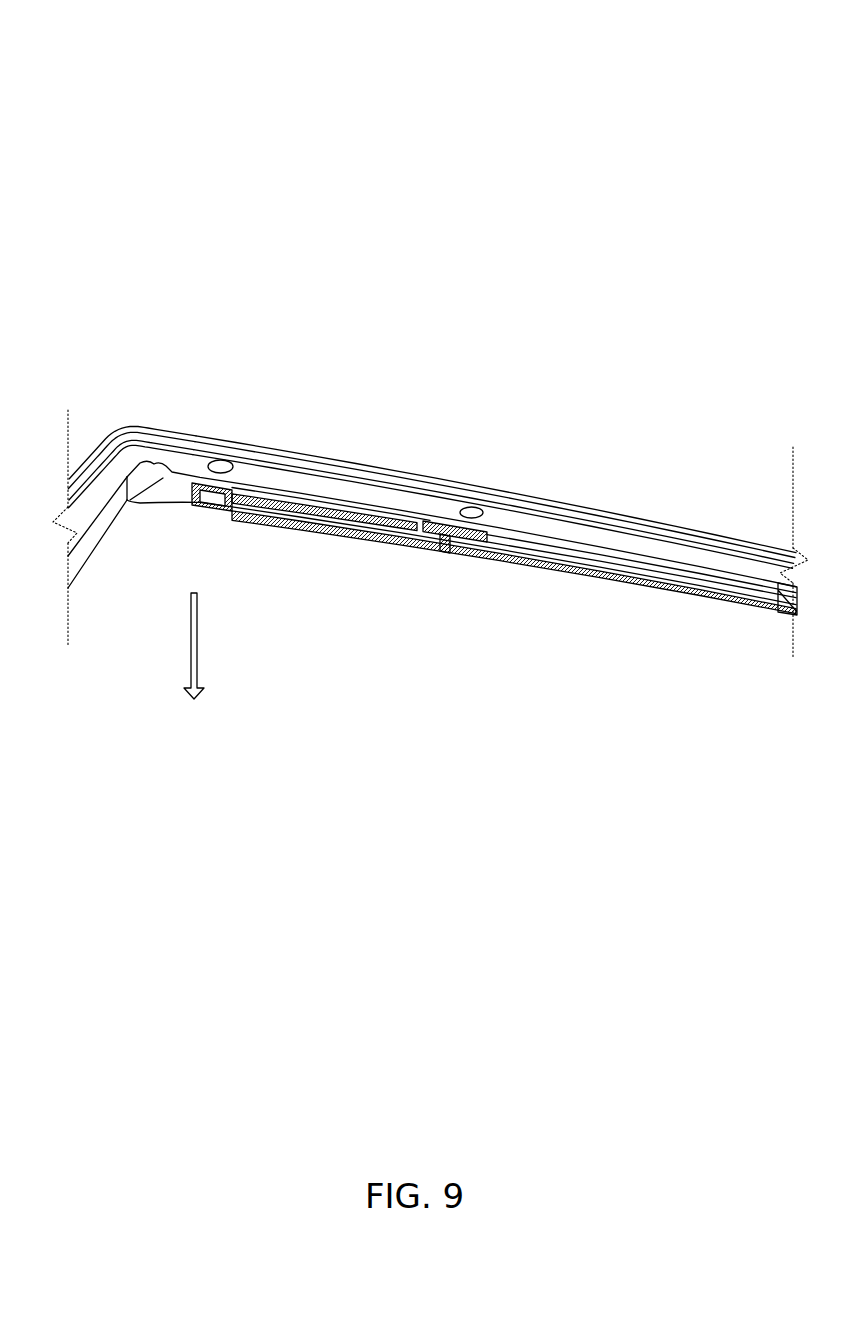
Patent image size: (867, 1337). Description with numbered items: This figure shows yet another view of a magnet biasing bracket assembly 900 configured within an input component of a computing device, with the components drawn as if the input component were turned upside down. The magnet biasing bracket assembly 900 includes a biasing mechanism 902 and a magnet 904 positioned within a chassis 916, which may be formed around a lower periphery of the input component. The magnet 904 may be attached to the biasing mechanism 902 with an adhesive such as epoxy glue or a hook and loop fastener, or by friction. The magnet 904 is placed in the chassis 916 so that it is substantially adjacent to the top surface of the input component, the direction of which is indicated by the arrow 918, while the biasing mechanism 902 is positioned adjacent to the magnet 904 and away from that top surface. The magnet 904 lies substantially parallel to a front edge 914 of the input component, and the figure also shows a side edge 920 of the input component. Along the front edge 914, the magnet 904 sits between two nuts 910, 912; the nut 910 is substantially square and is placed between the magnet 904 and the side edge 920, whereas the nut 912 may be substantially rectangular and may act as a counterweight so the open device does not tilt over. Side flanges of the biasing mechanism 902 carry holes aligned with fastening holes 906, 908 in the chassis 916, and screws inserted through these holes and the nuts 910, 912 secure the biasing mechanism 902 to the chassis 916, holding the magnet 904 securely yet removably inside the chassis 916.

The magnet biasing bracket assembly 900 is at (171, 75).
The biasing mechanism 902 is at (347, 514).
The magnet 904 is at (371, 533).
The fastening hole 906 is at (226, 461).
The fastening hole 908 is at (474, 507).
The nut 910 is at (213, 499).
The nut 912 is at (521, 557).
The front edge 914 is at (675, 522).
The chassis 916 is at (588, 535).
The arrow 918 is at (197, 642).
The side edge 920 is at (91, 445).